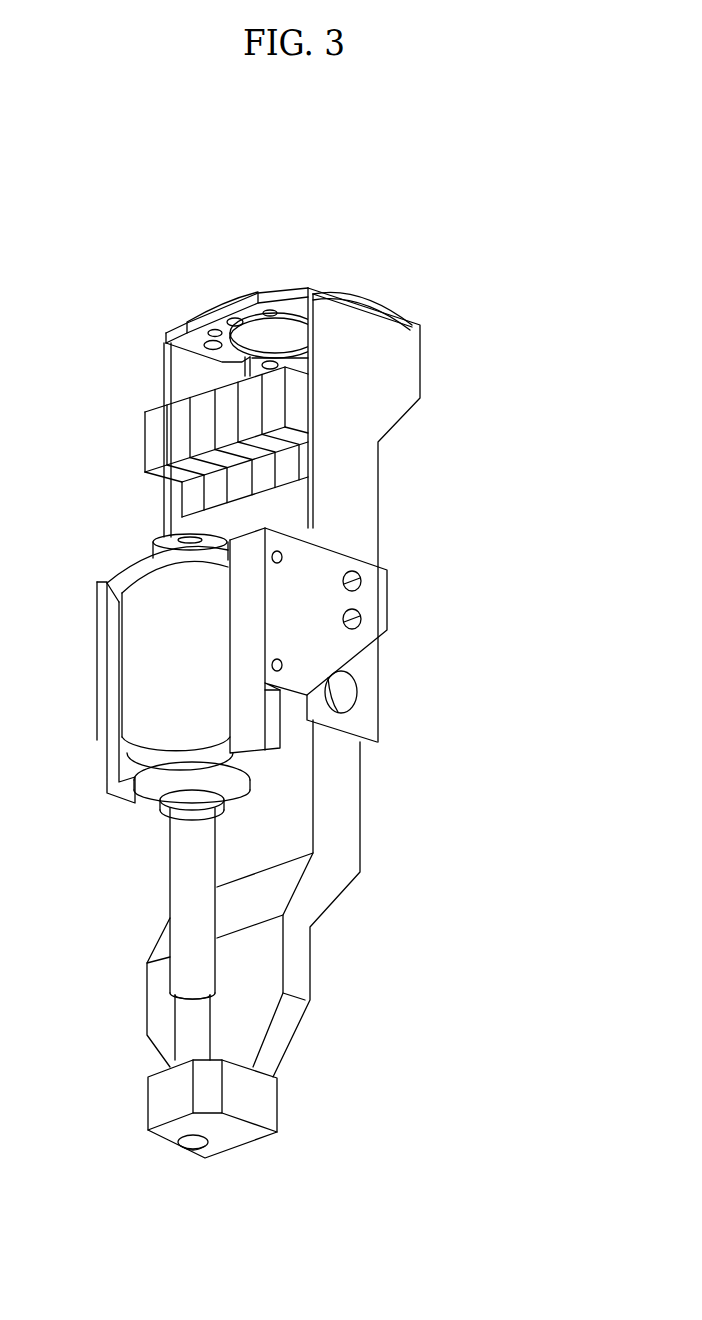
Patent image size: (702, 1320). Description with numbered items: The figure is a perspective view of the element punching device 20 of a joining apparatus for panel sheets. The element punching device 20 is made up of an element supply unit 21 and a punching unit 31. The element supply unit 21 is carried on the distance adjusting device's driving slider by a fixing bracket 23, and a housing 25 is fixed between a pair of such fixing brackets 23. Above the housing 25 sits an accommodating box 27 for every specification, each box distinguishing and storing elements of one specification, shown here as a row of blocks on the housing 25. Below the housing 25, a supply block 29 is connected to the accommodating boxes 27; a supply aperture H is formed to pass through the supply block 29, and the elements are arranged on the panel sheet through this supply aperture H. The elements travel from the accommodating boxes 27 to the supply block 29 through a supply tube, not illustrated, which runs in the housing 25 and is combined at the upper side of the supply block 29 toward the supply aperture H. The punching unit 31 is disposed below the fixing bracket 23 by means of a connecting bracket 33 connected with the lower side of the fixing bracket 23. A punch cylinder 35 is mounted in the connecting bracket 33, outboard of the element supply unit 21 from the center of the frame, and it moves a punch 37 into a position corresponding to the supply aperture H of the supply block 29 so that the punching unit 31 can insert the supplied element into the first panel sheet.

The element punching device 20 is at (306, 170).
The element supply unit 21 is at (552, 968).
The fixing bracket 23 is at (410, 352).
The housing 25 is at (293, 508).
The accommodating box 27 is at (150, 428).
The supply block 29 is at (276, 1102).
The punching unit 31 is at (552, 1095).
The connecting bracket 33 is at (378, 599).
The punch cylinder 35 is at (137, 683).
The punch 37 is at (187, 1027).
The supply aperture H is at (196, 1146).